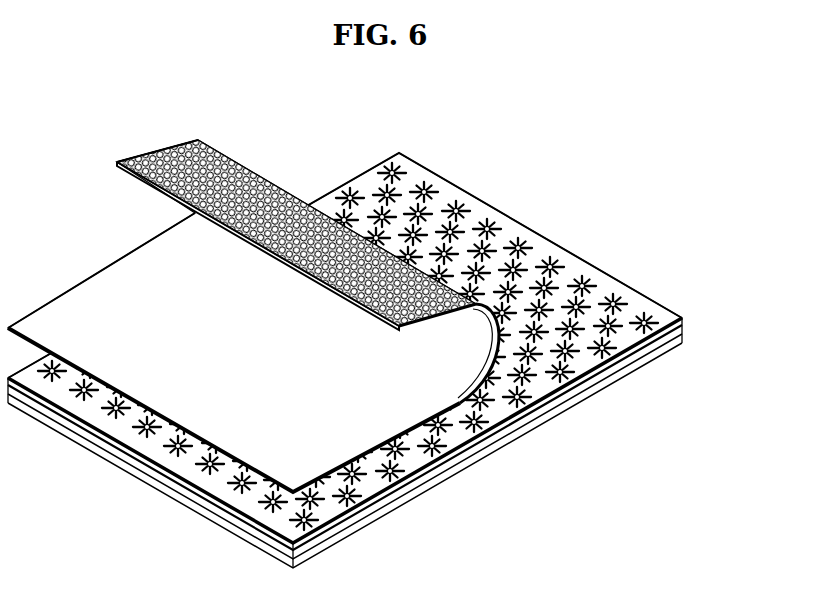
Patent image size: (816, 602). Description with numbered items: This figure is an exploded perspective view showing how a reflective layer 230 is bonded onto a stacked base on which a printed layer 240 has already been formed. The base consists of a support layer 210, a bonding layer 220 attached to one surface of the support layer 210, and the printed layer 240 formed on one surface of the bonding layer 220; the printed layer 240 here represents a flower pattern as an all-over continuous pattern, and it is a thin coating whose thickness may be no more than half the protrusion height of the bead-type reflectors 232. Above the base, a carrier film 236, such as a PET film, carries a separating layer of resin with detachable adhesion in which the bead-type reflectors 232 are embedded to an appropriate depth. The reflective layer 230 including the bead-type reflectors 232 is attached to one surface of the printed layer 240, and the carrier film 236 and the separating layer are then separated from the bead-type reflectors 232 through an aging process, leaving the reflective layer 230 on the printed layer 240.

The support layer 210 is at (684, 336).
The bonding layer 220 is at (684, 324).
The printed layer 240 is at (682, 318).
The reflective layer 230 is at (295, 209).
The bead-type reflector 232 is at (163, 150).
The carrier film 236 is at (98, 280).